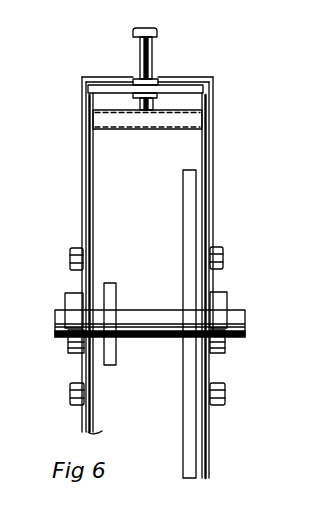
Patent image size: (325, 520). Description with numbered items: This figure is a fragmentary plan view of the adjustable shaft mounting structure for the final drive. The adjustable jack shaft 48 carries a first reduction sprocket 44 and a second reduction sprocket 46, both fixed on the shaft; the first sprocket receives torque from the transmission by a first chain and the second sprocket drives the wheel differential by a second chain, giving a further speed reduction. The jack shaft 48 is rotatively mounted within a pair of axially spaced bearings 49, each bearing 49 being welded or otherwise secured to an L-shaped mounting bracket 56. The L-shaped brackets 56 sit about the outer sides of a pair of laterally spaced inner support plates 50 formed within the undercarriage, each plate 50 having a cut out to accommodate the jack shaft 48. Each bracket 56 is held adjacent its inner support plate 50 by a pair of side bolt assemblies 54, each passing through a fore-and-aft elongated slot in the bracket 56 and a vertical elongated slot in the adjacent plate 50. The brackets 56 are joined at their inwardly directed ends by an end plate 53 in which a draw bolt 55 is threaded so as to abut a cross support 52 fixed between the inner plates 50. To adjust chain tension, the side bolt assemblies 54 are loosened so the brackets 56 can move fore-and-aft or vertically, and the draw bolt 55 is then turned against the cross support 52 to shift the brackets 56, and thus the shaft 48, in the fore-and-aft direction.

The first reduction sprocket 44 is at (183, 282).
The second reduction sprocket 46 is at (115, 283).
The adjustable jack shaft 48 is at (245, 314).
The bearing 49 is at (70, 348).
The inner support plate 50 is at (200, 149).
The cross support 52 is at (185, 119).
The end plate 53 is at (158, 81).
The side bolt assembly 54 is at (72, 252).
The draw bolt 55 is at (157, 31).
The L-shaped mounting bracket 56 is at (82, 152).